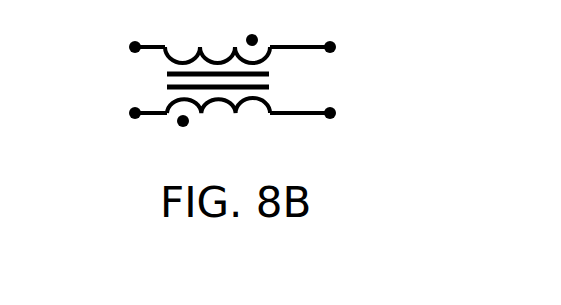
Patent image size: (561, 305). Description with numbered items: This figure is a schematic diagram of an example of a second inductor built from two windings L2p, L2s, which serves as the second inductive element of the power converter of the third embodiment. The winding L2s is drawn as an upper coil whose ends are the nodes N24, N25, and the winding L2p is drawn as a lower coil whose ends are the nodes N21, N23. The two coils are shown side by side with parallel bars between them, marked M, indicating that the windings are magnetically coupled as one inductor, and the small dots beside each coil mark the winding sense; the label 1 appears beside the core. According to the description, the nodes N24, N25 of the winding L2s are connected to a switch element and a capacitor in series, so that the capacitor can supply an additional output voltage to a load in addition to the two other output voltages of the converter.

The transformer 1 is at (232, 80).
The secondary winding of second inductor L2s is at (217, 38).
The primary winding of second inductor L2p is at (218, 119).
The mutual inductance / core M is at (204, 71).
The node N24 is at (104, 50).
The node N25 is at (357, 53).
The node N21 is at (104, 115).
The node N23 is at (357, 115).